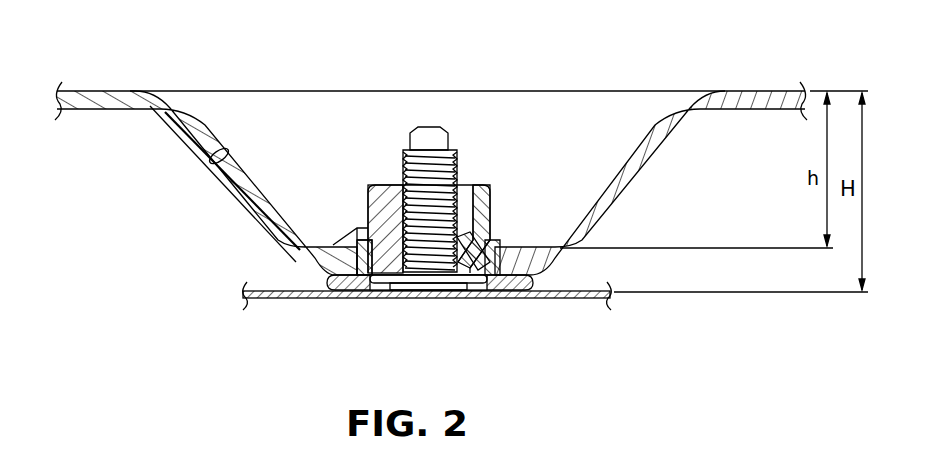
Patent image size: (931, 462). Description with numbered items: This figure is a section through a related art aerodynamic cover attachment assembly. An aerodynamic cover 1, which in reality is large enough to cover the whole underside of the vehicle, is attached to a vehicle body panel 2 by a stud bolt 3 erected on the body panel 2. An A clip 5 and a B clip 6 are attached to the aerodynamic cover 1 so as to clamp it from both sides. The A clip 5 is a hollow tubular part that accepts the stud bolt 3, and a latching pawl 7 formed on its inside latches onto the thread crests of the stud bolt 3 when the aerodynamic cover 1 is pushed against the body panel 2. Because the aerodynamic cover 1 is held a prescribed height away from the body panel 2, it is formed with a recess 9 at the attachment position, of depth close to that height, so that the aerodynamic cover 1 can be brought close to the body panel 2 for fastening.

The aerodynamic cover 1 is at (93, 91).
The vehicle body panel 2 is at (267, 293).
The stud bolt 3 is at (448, 142).
The A clip 5 is at (490, 196).
The B clip 6 is at (482, 292).
The latching pawl 7 is at (490, 222).
The recess 9 is at (216, 158).